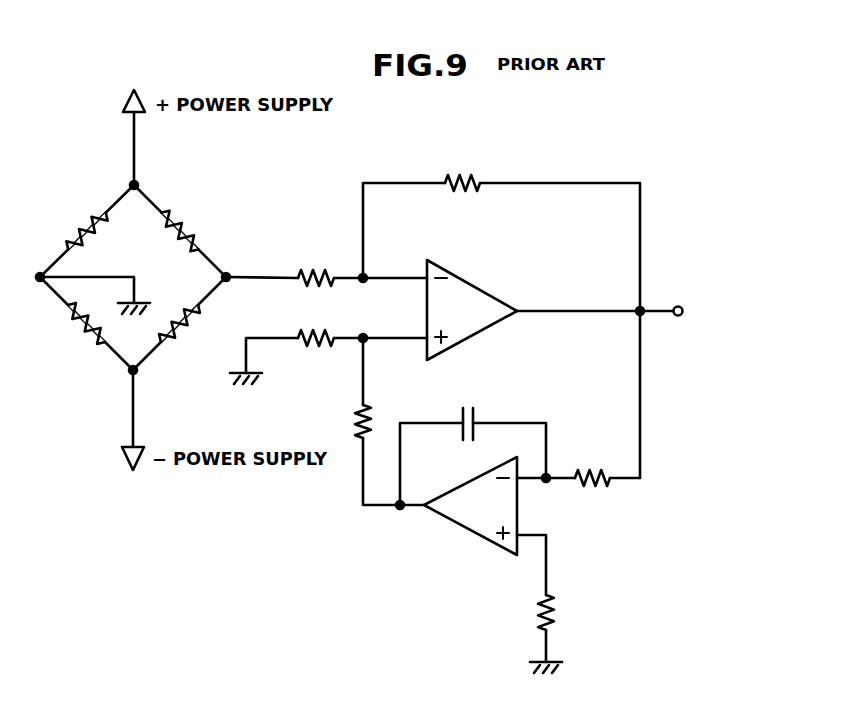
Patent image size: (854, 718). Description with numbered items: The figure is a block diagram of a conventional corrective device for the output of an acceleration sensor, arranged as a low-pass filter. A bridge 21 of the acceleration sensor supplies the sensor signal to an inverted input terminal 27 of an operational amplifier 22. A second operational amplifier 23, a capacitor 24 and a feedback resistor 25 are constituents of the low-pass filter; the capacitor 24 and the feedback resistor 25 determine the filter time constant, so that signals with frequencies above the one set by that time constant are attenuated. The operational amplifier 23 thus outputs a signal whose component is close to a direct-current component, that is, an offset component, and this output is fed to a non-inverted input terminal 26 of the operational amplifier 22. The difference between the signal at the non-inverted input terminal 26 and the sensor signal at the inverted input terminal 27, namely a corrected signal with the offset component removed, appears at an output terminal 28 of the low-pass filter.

The bridge of the acceleration sensor 21 is at (80, 203).
The operational amplifier 22 is at (467, 283).
The operational amplifier 23 is at (462, 533).
The capacitor 24 is at (470, 405).
The feedback resistor 25 is at (592, 462).
The non-inverted input terminal 26 is at (357, 345).
The inverted input terminal 27 is at (360, 276).
The output terminal 28 is at (679, 305).